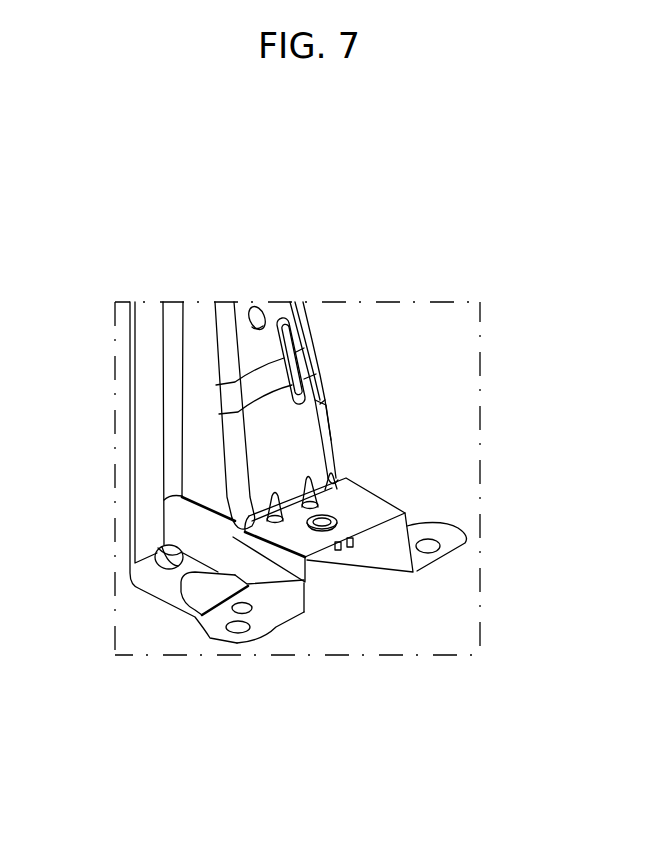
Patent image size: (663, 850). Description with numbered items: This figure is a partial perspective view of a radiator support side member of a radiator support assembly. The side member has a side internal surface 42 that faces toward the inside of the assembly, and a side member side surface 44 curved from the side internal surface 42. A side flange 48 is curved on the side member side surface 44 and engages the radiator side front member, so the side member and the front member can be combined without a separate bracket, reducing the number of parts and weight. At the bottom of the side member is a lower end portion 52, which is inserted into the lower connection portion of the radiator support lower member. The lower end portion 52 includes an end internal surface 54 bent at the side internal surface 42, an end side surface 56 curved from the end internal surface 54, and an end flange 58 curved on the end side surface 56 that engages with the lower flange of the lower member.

The side internal surface 42 is at (263, 447).
The side member side surface 44 is at (195, 360).
The side flange 48 is at (148, 476).
The lower end portion 52 is at (323, 579).
The end internal surface 54 is at (347, 508).
The end side surface 56 is at (294, 583).
The end flange 58 is at (223, 643).